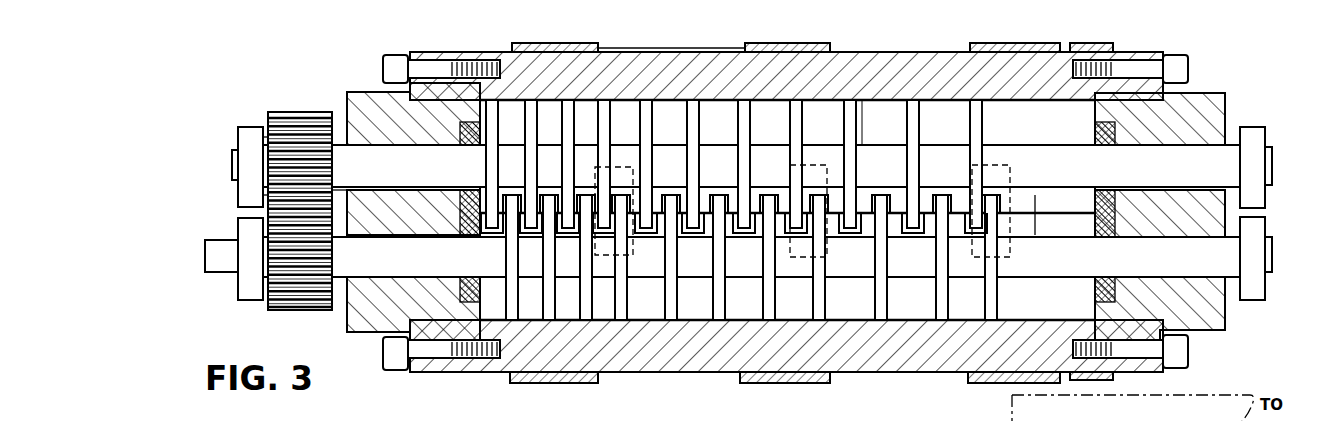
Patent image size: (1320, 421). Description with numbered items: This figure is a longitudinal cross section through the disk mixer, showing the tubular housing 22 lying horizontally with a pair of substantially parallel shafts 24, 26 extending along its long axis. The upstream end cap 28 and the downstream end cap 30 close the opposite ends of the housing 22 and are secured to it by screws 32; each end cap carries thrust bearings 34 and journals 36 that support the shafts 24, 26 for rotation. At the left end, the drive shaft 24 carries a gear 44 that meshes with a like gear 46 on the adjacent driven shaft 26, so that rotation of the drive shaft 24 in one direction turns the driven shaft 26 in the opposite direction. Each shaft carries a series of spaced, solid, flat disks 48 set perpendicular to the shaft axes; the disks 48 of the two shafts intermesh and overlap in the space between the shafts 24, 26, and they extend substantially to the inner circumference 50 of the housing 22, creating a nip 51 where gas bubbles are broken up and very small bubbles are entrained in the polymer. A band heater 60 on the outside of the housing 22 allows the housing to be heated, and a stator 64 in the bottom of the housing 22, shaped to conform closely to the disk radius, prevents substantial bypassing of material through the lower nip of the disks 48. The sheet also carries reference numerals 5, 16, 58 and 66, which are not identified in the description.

The hammer mill assembly 5 is at (1268, 73).
The housing 16 is at (874, 420).
The tubular housing 22 is at (866, 68).
The drive shaft 24 is at (212, 258).
The driven shaft 26 is at (417, 176).
The upstream end cap 28 is at (370, 100).
The downstream end cap 30 is at (1222, 100).
The screws 32 is at (396, 357).
The thrust bearings 34 is at (462, 132).
The journals 36 is at (362, 212).
The gear 44 is at (282, 312).
The gear 46 is at (300, 120).
The disks 48 is at (716, 137).
The inner circumference 50 is at (870, 100).
The nip 51 is at (972, 100).
The support 58 is at (830, 414).
The band heater 60 is at (745, 48).
The stator 64 is at (1038, 205).
The base 66 is at (960, 414).